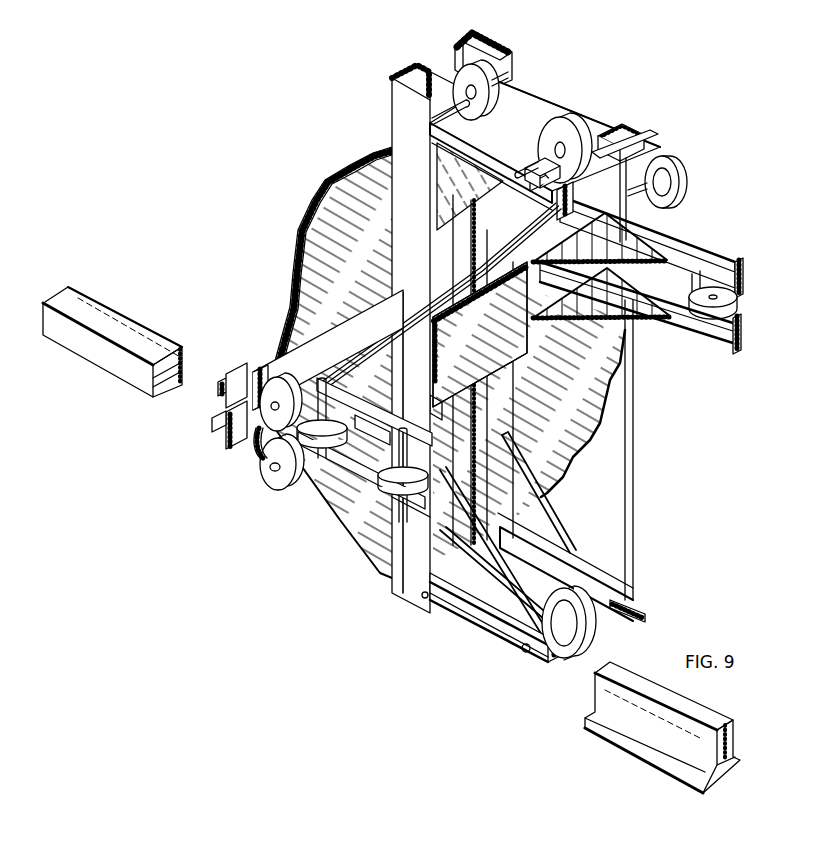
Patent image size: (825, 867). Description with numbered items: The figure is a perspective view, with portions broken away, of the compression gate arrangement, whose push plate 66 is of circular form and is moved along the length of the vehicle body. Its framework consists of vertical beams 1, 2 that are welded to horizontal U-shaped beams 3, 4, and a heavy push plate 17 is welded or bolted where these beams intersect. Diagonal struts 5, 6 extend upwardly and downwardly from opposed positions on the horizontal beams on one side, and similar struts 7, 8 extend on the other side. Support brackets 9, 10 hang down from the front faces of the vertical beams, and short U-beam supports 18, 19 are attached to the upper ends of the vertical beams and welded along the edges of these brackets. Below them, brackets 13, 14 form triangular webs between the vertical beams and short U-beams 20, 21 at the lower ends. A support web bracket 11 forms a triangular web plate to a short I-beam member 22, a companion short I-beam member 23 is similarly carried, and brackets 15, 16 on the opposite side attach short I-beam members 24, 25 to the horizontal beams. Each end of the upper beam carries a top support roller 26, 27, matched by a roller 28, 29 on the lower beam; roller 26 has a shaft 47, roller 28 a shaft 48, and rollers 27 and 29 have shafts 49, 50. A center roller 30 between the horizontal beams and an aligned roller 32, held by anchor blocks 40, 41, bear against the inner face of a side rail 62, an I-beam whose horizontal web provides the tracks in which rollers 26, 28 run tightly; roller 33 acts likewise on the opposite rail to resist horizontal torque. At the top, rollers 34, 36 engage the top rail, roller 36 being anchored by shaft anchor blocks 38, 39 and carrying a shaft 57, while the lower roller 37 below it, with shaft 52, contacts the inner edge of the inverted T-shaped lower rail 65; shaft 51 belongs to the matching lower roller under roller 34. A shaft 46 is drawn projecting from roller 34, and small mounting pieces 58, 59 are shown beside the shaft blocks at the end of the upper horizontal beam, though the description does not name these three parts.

The vertical beam 1 is at (473, 33).
The vertical beam 2 is at (402, 73).
The horizontal U-shaped beam 3 is at (275, 367).
The horizontal U-shaped beam 4 is at (252, 455).
The strut 5 is at (397, 329).
The strut 6 is at (537, 592).
The strut 7 is at (633, 553).
The strut 8 is at (637, 193).
The support bracket 9 is at (524, 139).
The support bracket 10 is at (471, 194).
The support web bracket 11 is at (400, 378).
The bracket 13 is at (464, 532).
The bracket 14 is at (532, 505).
The bracket 15 is at (605, 310).
The bracket 16 is at (619, 251).
The push plate 17 is at (487, 322).
The U-beam support 18 is at (545, 118).
The U-beam support 19 is at (510, 165).
The short U-beam 20 is at (490, 610).
The short U-beam 21 is at (573, 567).
The short I-beam member 22 is at (305, 483).
The short I-beam member 23 is at (350, 467).
The short I-beam member 24 is at (740, 323).
The short I-beam member 25 is at (707, 248).
The top support roller 26 is at (288, 383).
The top support roller 27 is at (673, 163).
The roller 28 is at (263, 475).
The roller 29 is at (688, 280).
The center roller 30 is at (330, 422).
The roller 32 is at (383, 490).
The roller 33 is at (743, 290).
The roller 34 is at (498, 77).
The roller 36 is at (582, 118).
The roller 37 is at (562, 660).
The shaft anchor block 38 is at (612, 140).
The shaft anchor block 39 is at (531, 191).
The anchor block 40 is at (443, 413).
The anchor block 41 is at (423, 500).
The shaft 46 is at (440, 110).
The shaft 47 is at (223, 438).
The shaft 48 is at (270, 470).
The shaft 49 is at (322, 387).
The shaft 50 is at (372, 425).
The shaft 51 is at (427, 597).
The shaft 52 is at (521, 650).
The shaft 57 is at (612, 128).
The block 58 is at (218, 398).
The clip 59 is at (217, 415).
The side rail 62 is at (98, 353).
The lower rail 65 is at (652, 727).
The plate 66 is at (340, 228).